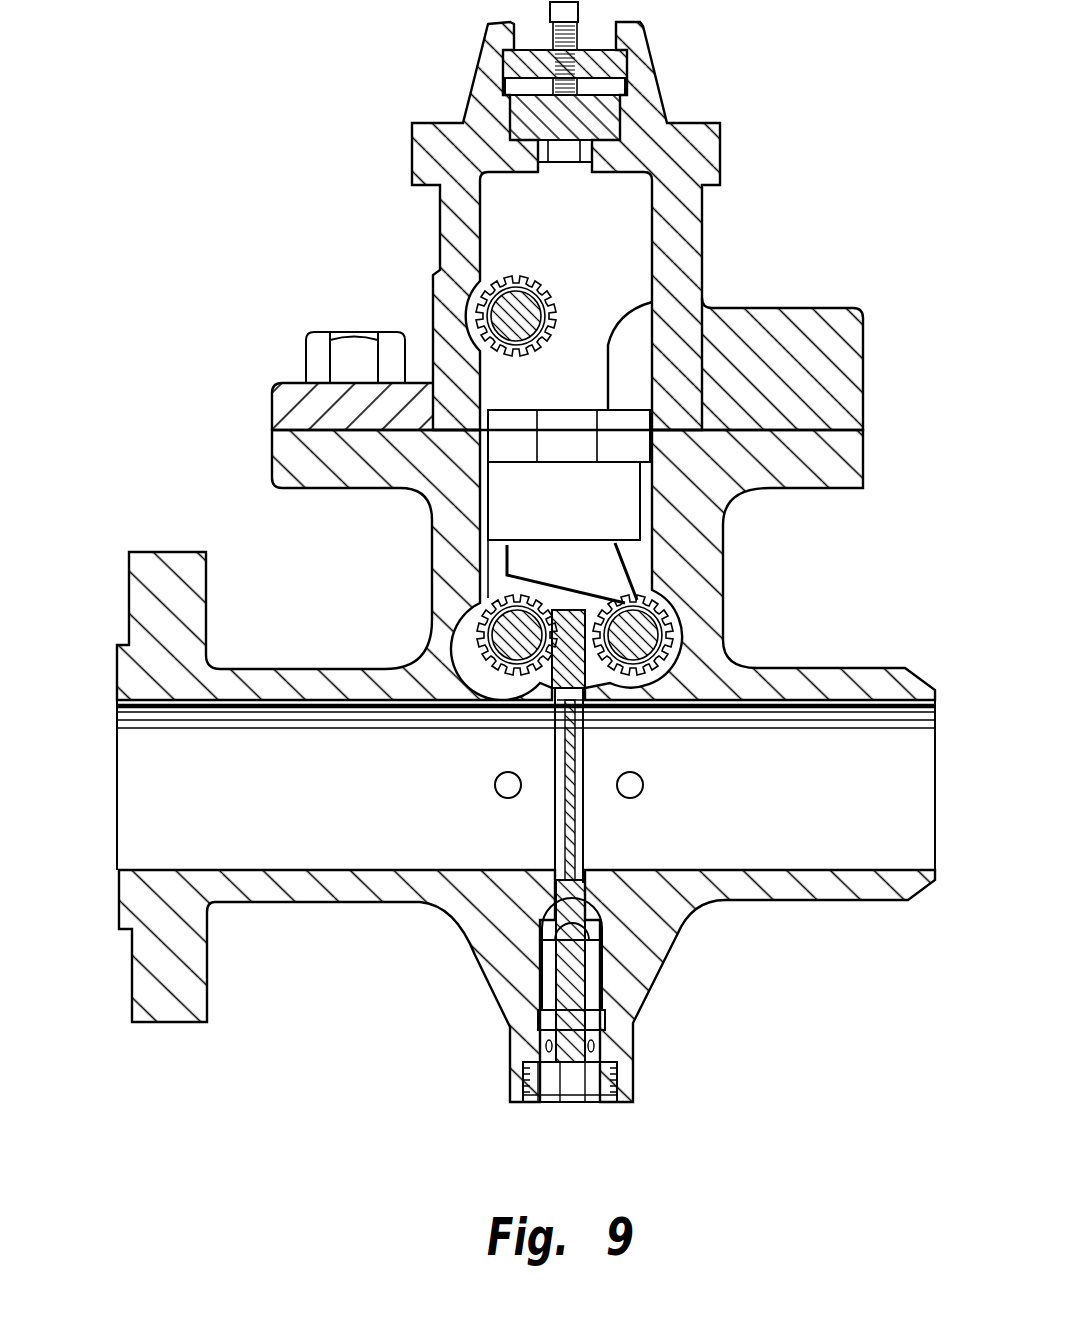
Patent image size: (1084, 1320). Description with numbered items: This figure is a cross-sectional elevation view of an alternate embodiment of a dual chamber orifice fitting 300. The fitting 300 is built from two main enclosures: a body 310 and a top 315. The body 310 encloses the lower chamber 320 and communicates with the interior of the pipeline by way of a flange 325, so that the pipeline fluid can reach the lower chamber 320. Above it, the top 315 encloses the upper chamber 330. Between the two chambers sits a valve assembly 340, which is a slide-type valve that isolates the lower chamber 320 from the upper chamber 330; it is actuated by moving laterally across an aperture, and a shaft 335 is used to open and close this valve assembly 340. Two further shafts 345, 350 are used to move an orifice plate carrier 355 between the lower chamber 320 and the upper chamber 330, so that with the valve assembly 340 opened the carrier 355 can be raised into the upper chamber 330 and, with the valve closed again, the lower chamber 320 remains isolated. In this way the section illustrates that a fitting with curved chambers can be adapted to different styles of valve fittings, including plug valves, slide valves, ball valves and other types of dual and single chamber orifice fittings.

The dual chamber orifice fitting 300 is at (768, 47).
The body 310 is at (866, 668).
The top 315 is at (786, 308).
The lower chamber 320 is at (648, 552).
The flange 325 is at (132, 983).
The upper chamber 330 is at (594, 233).
The shaft 335 is at (642, 628).
The valve assembly 340 is at (517, 574).
The shaft 345 is at (510, 626).
The shaft 350 is at (486, 303).
The orifice plate carrier 355 is at (576, 749).